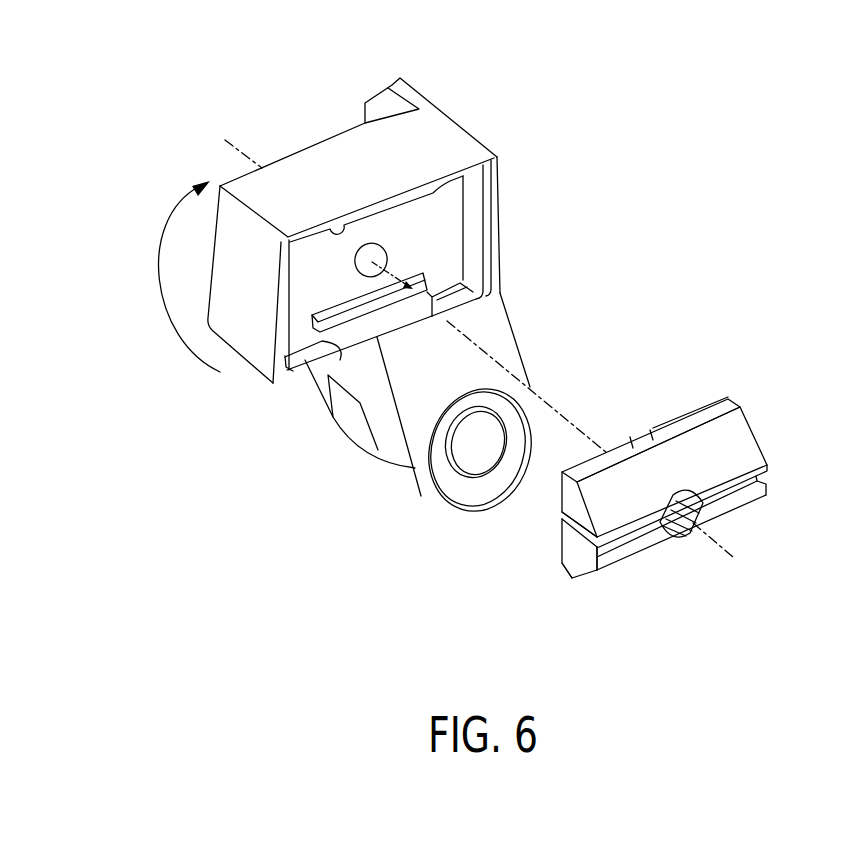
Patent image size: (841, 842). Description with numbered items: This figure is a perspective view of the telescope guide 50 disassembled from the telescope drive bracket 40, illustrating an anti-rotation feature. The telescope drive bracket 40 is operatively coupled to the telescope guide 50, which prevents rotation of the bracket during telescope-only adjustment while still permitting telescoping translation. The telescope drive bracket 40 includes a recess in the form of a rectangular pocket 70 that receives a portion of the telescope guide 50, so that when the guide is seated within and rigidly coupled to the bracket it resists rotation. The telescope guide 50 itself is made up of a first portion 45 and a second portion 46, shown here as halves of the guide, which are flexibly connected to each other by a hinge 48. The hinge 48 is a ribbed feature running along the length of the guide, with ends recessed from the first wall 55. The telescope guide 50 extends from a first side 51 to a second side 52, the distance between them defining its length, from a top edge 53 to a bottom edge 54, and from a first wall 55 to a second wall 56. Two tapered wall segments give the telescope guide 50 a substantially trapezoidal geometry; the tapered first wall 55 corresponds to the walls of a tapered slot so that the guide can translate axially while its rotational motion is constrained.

The telescope drive bracket 40 is at (325, 160).
The rectangular pocket 70 is at (467, 245).
The first portion 45 is at (533, 503).
The second portion 46 is at (534, 562).
The hinge 48 is at (560, 518).
The telescope guide 50 is at (569, 606).
The first side 51 is at (592, 575).
The second side 52 is at (767, 458).
The top edge 53 is at (700, 412).
The bottom edge 54 is at (563, 577).
The first wall 55 is at (740, 428).
The second wall 56 is at (610, 458).